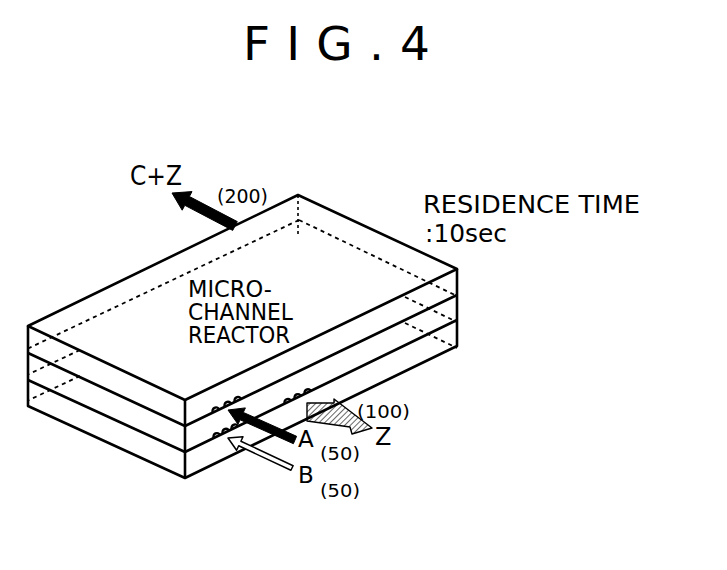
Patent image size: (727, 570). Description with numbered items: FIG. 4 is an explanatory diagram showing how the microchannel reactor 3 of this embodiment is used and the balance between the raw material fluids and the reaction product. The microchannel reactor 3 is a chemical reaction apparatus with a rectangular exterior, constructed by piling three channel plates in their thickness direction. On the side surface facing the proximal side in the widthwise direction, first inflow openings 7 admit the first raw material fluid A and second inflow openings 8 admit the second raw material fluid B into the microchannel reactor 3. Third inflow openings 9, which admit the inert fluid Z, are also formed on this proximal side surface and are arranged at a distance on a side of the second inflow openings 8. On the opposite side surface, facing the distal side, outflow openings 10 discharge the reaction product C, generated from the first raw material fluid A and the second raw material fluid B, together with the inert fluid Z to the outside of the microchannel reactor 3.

The microchannel reactor 3 is at (372, 193).
The first inflow openings 7 is at (214, 414).
The second inflow openings 8 is at (215, 437).
The third inflow openings 9 is at (313, 387).
The outflow openings 10 is at (280, 230).